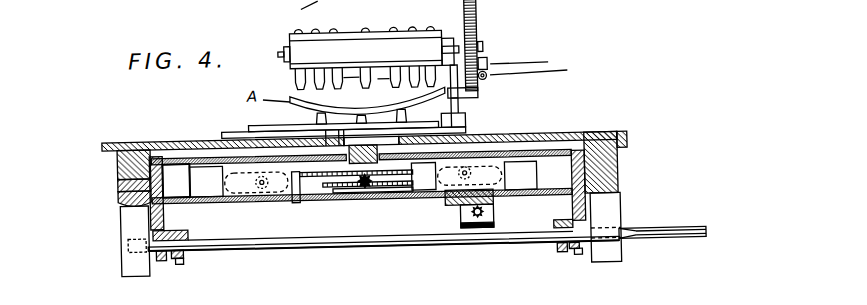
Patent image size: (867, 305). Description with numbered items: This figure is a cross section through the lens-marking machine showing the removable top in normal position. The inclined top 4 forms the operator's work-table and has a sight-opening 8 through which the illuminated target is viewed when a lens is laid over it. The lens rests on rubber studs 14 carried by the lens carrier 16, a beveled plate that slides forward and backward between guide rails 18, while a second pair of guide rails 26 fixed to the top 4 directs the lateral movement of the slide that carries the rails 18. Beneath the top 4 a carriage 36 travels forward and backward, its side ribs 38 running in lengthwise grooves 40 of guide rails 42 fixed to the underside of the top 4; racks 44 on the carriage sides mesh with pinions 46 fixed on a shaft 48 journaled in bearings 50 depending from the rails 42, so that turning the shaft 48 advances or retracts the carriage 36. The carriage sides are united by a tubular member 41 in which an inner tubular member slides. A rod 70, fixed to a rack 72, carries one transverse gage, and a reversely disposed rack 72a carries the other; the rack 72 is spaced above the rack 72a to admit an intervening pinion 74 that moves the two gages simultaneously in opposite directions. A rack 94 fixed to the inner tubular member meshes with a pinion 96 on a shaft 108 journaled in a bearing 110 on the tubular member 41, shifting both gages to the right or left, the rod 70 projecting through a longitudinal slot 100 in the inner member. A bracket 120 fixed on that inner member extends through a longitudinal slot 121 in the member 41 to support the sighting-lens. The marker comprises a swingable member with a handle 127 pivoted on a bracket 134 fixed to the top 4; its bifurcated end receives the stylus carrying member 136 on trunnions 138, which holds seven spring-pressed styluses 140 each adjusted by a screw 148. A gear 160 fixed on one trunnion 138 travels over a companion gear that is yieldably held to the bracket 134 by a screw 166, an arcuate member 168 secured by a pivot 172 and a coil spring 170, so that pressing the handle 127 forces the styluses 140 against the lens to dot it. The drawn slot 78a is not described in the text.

The inclined top 4 is at (107, 137).
The sight-opening 8 is at (381, 158).
The studs 14 is at (320, 118).
The lens carrier 16 is at (449, 130).
The guide rails 18 is at (241, 126).
The guide rails 26 is at (508, 128).
The carriage 36 is at (573, 135).
The ribs 38 is at (143, 177).
The grooves 40 is at (140, 187).
The tubular member 41 is at (217, 202).
The guide rails 42 is at (140, 198).
The racks 44 is at (588, 217).
The pinions 46 is at (575, 265).
The shaft 48 is at (349, 242).
The bearings 50 is at (606, 262).
The rod 70 is at (261, 186).
The rack 72 is at (297, 203).
The rack 72a is at (345, 218).
The pinion 74 is at (368, 192).
The roller slot 78a is at (447, 202).
The rack 94 is at (453, 199).
The pinion 96 is at (472, 215).
The longitudinal slot 100 is at (363, 178).
The shaft 108 is at (496, 251).
The bearing 110 is at (492, 223).
The bracket 120 is at (423, 177).
The longitudinal slot 121 is at (368, 106).
The handle 127 is at (459, 42).
The bracket 134 is at (492, 91).
The stylus carrying member 136 is at (298, 40).
The trunnions 138 is at (290, 50).
The styluses 140 is at (300, 76).
The screw 148 is at (308, 46).
The gear 160 is at (478, 35).
The screw 166 is at (498, 83).
The arcuate member 168 is at (495, 61).
The coil spring 170 is at (545, 71).
The pivot 172 is at (535, 56).